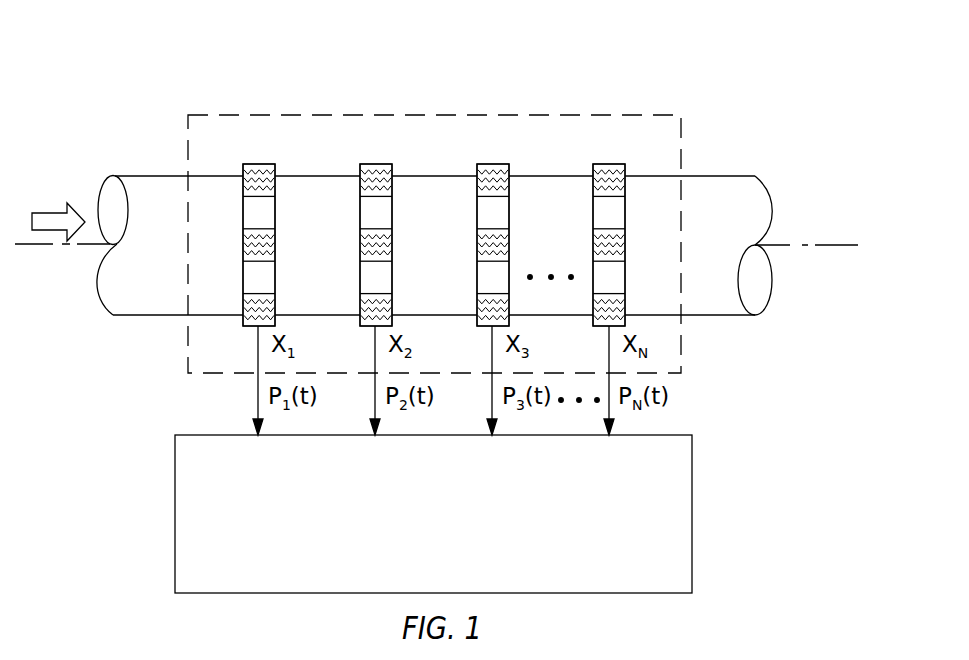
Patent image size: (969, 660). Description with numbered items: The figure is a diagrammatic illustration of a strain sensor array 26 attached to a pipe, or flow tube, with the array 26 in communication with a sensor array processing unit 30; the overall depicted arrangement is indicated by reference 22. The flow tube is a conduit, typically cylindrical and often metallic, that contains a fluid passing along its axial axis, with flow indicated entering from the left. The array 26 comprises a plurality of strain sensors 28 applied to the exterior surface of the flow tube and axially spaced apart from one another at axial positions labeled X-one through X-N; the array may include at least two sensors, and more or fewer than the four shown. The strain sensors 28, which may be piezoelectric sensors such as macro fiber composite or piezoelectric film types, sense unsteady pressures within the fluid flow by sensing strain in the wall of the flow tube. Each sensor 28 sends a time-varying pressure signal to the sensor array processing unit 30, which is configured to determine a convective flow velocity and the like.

The flow measurement system 22 is at (712, 106).
The strain sensor array 26 is at (545, 115).
The strain sensors 28 is at (276, 185).
The sensor array processing unit 30 is at (692, 521).